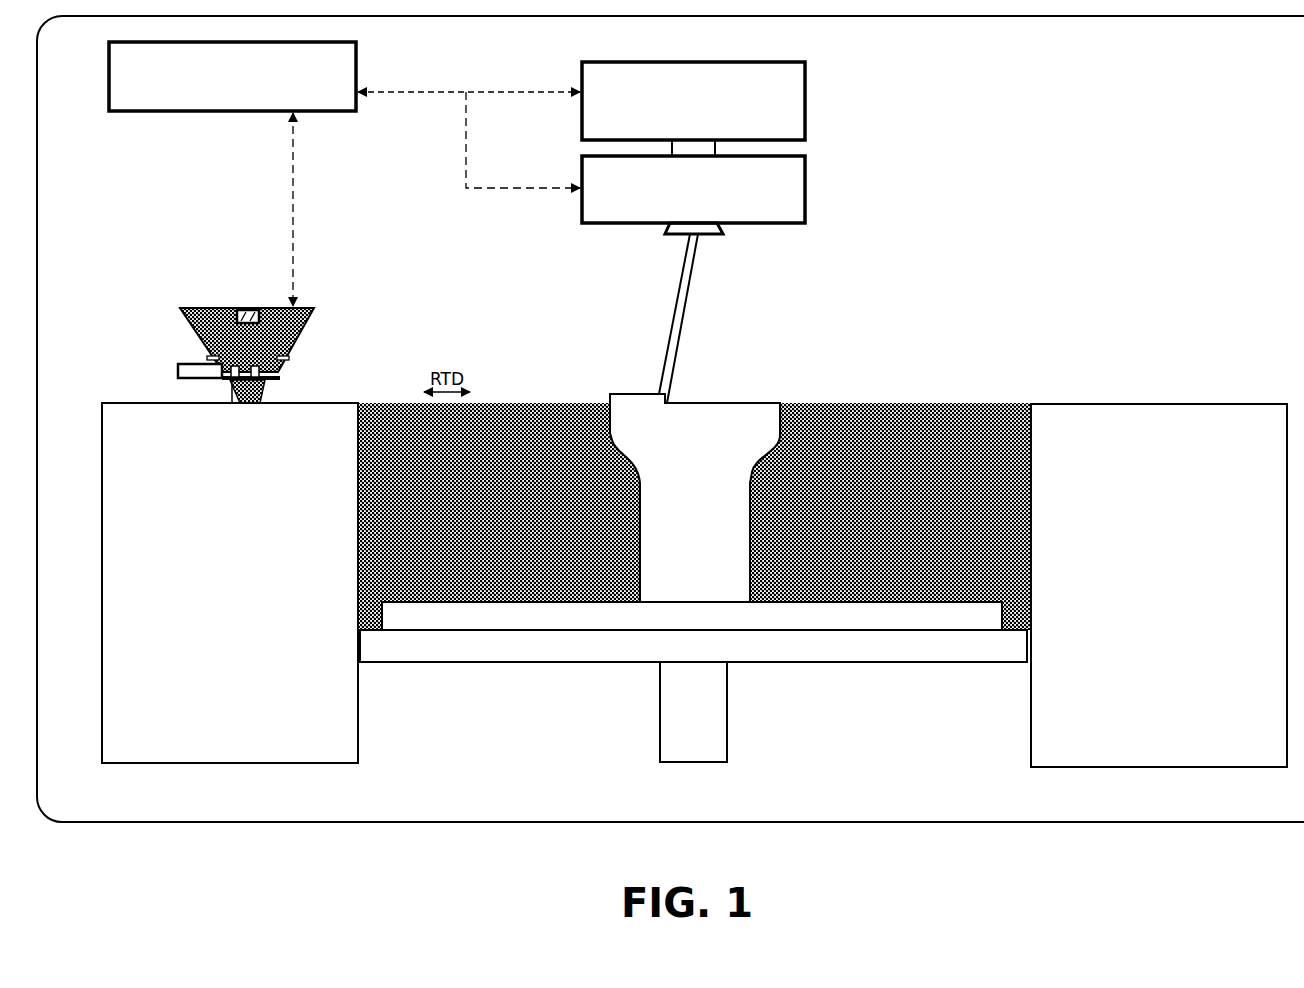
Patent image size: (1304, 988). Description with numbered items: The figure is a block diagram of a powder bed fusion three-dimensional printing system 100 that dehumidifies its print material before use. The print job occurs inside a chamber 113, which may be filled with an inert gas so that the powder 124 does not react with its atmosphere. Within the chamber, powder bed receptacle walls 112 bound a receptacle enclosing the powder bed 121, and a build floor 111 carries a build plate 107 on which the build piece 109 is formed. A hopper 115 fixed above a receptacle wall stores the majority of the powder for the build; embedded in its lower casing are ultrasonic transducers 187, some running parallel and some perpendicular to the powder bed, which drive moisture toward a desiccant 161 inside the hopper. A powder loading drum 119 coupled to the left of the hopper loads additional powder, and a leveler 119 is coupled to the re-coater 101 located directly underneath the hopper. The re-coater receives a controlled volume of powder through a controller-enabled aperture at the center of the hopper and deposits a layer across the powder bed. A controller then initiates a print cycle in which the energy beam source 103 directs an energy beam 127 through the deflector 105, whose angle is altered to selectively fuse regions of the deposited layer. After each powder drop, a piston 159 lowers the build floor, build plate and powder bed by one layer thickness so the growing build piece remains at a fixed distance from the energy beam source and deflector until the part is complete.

The PBF 3-D system 100 is at (1065, 830).
The re-coater 101 is at (258, 393).
The energy beam source 103 is at (693, 109).
The deflector 105 is at (693, 195).
The build plate 107 is at (978, 600).
The build piece 109 is at (780, 403).
The build floor 111 is at (780, 665).
The powder bed receptacle wall 112 is at (694, 585).
The chamber 113 is at (670, 419).
The hopper 115 is at (293, 325).
The powder loading drum 119 is at (228, 392).
The powder bed 121 is at (972, 450).
The powder 124 is at (215, 332).
The energy beam 127 is at (673, 297).
The piston 159 is at (680, 687).
The desiccant 161 is at (248, 310).
The ultrasonic transducers 187 is at (287, 358).